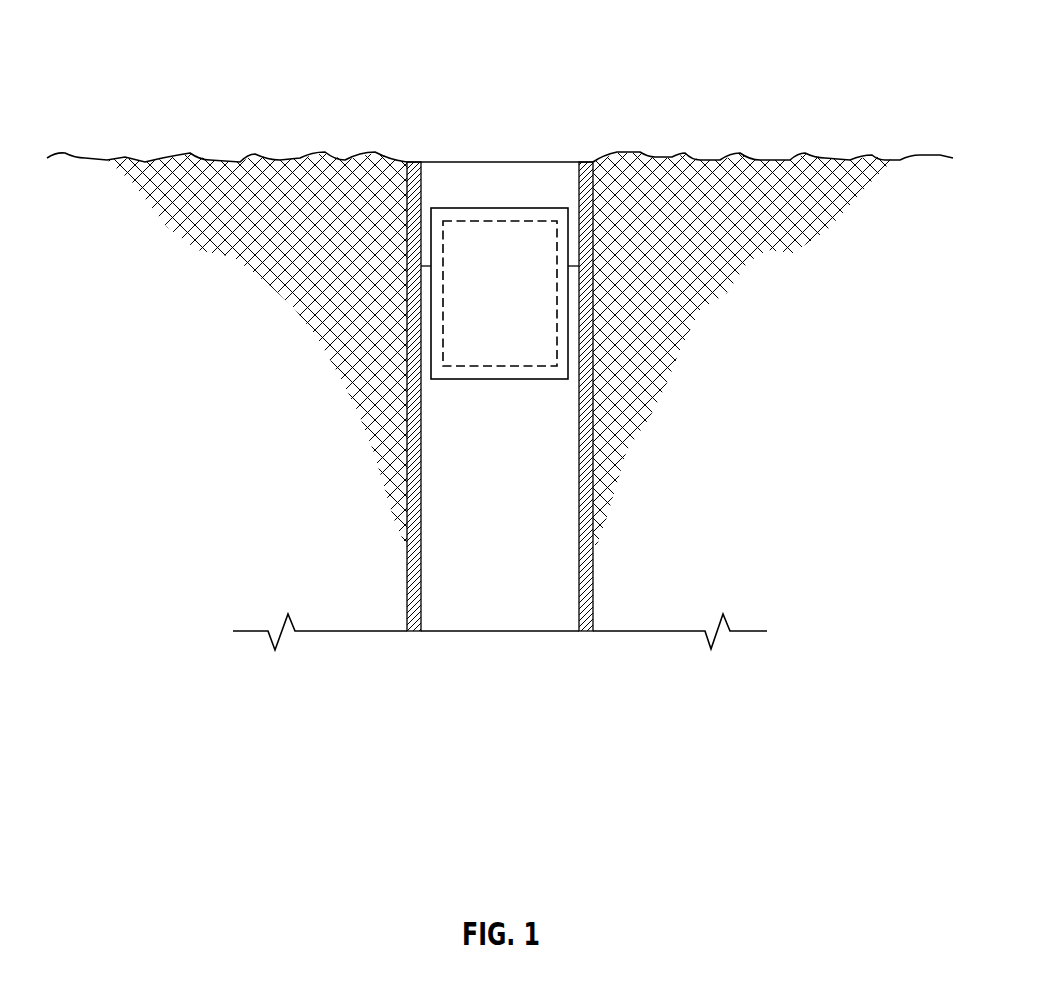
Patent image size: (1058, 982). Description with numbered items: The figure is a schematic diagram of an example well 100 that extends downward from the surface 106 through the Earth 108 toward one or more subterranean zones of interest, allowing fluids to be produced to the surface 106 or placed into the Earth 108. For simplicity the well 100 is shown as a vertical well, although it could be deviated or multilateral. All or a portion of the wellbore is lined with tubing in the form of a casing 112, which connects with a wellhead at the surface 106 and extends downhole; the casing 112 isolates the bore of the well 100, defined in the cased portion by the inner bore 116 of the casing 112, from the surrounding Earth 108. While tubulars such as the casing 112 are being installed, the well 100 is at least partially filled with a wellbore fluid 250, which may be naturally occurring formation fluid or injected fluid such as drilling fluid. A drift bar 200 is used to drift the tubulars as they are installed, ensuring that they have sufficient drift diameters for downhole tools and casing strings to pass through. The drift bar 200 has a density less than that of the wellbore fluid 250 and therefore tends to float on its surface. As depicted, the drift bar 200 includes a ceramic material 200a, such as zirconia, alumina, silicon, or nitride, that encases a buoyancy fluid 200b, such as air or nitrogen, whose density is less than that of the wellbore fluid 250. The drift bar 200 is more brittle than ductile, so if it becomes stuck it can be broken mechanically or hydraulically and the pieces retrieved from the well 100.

The well 100 is at (282, 48).
The surface 106 is at (82, 158).
The Earth 108 is at (270, 390).
The casing 112 is at (407, 597).
The inner bore 116 is at (559, 594).
The drift bar 200 is at (549, 174).
The ceramic material 200a is at (431, 373).
The buoyancy fluid 200b is at (541, 344).
The wellbore fluid 250 is at (518, 461).